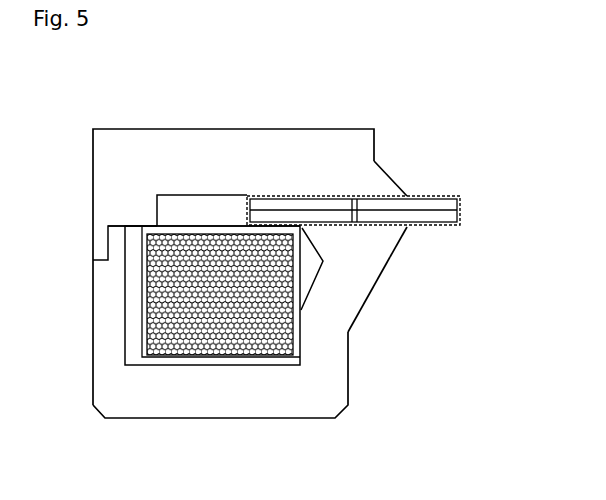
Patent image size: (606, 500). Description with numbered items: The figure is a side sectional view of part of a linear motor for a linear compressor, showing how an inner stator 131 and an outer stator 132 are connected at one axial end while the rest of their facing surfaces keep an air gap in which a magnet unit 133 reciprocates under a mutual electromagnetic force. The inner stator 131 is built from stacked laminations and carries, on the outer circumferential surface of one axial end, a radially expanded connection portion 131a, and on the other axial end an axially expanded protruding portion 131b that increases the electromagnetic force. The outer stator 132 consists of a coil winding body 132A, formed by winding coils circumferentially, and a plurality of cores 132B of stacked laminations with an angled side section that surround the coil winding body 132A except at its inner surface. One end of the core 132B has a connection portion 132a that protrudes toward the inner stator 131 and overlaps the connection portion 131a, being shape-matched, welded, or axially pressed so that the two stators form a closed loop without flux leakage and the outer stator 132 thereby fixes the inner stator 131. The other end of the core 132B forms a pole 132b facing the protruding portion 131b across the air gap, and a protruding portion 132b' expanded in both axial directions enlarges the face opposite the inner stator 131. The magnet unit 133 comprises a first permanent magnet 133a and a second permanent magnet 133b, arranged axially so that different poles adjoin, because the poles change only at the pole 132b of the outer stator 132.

The inner stator 131 is at (332, 124).
The connection portion 131a is at (99, 220).
The protruding portion 131b is at (383, 170).
The outer stator 132 is at (337, 425).
The connection portion 132a is at (109, 241).
The pole 132b is at (371, 280).
The protruding portion 132b' is at (415, 243).
The coil winding body 132A is at (255, 350).
The core 132B is at (170, 407).
The magnet unit 133 is at (392, 202).
The first permanent magnet 133a is at (347, 197).
The second permanent magnet 133b is at (460, 206).